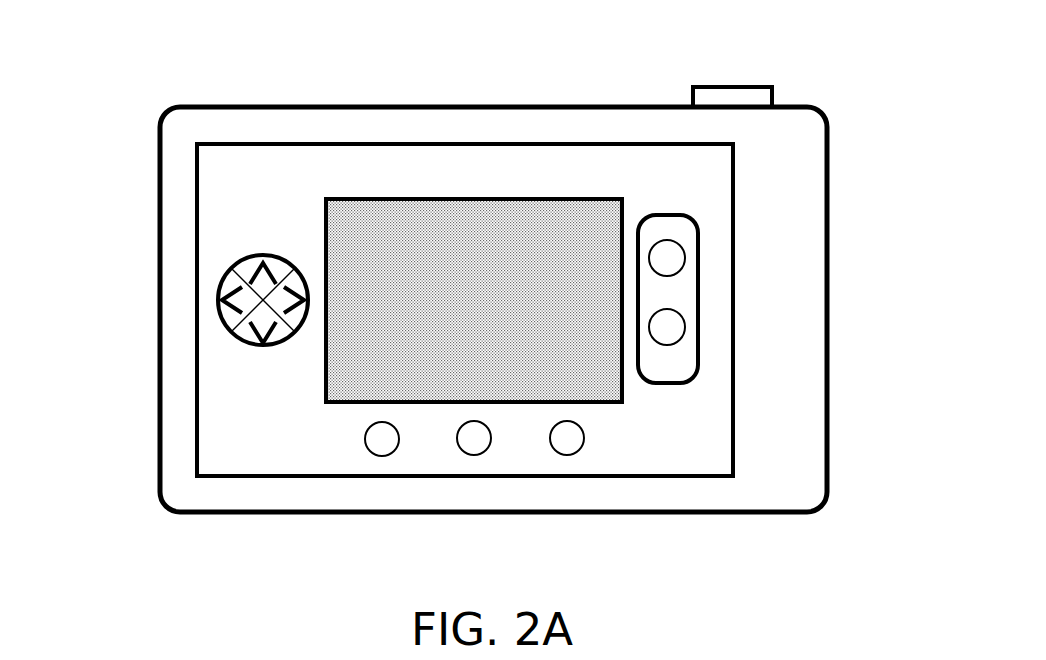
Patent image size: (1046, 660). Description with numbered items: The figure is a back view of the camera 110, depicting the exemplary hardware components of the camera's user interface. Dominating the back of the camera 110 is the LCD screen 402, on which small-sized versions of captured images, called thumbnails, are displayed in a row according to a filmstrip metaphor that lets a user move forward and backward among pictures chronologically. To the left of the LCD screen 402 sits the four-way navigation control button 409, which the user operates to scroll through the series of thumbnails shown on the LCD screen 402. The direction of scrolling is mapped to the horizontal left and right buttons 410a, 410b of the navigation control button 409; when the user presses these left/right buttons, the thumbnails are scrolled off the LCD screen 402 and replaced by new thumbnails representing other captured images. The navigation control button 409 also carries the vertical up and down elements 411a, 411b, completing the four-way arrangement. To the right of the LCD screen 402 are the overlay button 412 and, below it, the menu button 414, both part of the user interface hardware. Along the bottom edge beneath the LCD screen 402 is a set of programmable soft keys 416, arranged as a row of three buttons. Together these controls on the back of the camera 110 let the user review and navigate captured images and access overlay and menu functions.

The camera 110 is at (641, 28).
The LCD screen 402 is at (510, 198).
The four-way navigation control button 409 is at (256, 220).
The left button 410a is at (220, 292).
The right button 410b is at (237, 320).
The up directional button 411a is at (256, 258).
The down directional button 411b is at (256, 345).
The overlay button 412 is at (678, 240).
The menu button 414 is at (676, 310).
The programmable soft keys 416 is at (567, 455).